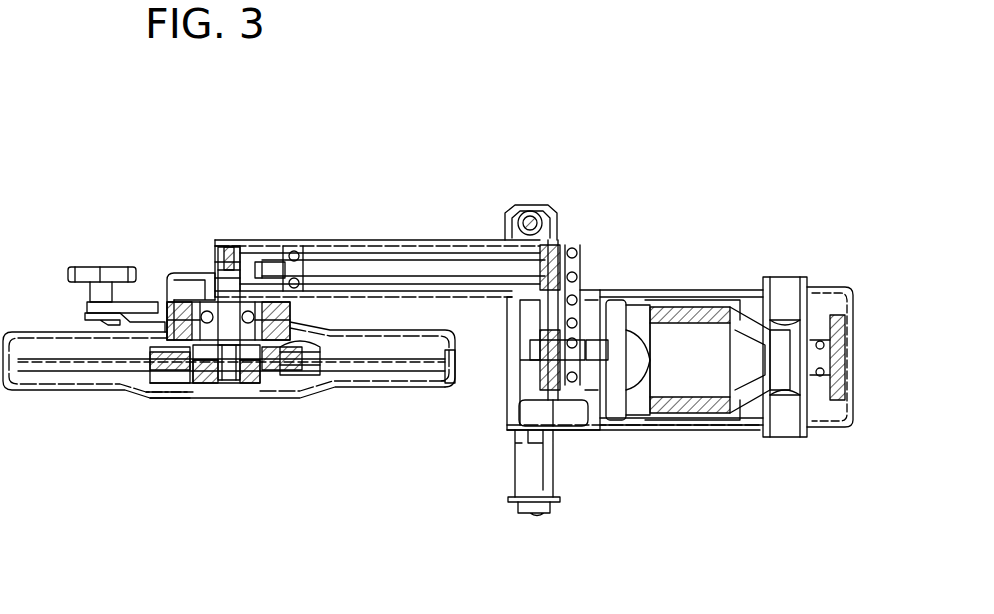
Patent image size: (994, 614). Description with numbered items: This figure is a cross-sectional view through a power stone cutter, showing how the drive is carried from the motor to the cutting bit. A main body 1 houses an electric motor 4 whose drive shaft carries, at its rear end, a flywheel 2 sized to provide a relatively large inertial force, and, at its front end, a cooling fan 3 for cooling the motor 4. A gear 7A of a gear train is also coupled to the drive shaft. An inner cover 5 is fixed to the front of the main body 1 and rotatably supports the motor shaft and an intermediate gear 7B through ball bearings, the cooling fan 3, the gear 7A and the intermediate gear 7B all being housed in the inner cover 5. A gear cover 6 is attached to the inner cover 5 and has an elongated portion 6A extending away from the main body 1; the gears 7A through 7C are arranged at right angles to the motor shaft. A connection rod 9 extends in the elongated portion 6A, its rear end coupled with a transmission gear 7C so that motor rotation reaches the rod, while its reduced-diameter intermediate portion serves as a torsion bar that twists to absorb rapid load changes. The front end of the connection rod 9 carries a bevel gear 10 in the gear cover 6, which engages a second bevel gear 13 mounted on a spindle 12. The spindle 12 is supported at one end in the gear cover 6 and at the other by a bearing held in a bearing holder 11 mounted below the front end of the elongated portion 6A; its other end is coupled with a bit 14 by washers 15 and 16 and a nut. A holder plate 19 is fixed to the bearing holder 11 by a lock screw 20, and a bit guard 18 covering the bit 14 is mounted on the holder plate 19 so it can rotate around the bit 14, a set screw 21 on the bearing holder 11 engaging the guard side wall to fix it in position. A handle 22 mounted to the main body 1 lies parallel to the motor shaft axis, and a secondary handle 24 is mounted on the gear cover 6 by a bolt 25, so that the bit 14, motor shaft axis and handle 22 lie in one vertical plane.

The main body 1 is at (745, 290).
The flywheel 2 is at (833, 290).
The cooling fan 3 is at (605, 315).
The electric motor 4 is at (693, 333).
The inner cover 5 is at (582, 432).
The gear cover 6 is at (372, 240).
The elongated portion 6A is at (440, 240).
The gear 7A is at (528, 385).
The intermediate gear 7B is at (580, 285).
The transmission gear 7C is at (555, 312).
The connection rod 9 is at (487, 268).
The bevel gear 10 is at (280, 248).
The bearing holder 11 is at (147, 303).
The spindle 12 is at (228, 385).
The second bevel gear 13 is at (197, 280).
The bit 14 is at (412, 387).
The washer 15 is at (323, 367).
The washer 16 is at (293, 347).
The bit guard 18 is at (52, 390).
The holder plate 19 is at (150, 392).
The lock screw 20 is at (182, 390).
The set screw 21 is at (85, 265).
The handle 22 is at (823, 300).
The secondary handle 24 is at (508, 497).
The bolt 25 is at (537, 514).